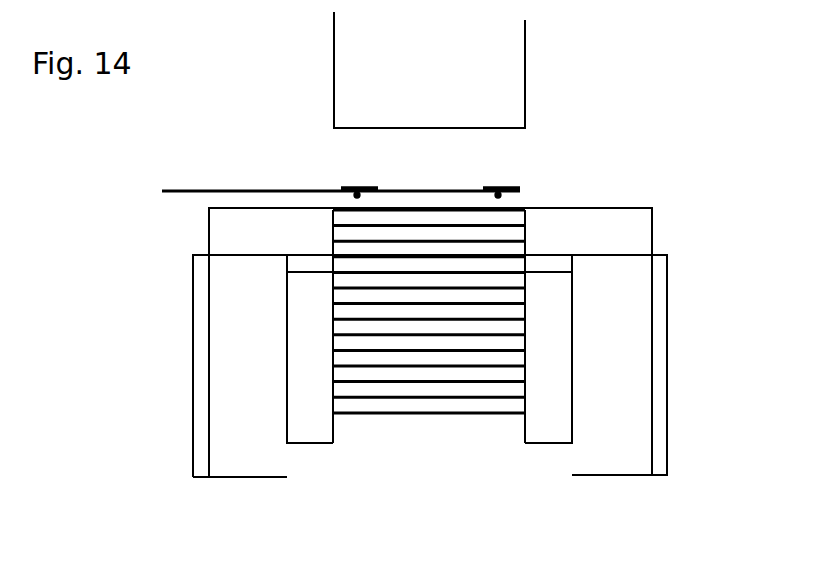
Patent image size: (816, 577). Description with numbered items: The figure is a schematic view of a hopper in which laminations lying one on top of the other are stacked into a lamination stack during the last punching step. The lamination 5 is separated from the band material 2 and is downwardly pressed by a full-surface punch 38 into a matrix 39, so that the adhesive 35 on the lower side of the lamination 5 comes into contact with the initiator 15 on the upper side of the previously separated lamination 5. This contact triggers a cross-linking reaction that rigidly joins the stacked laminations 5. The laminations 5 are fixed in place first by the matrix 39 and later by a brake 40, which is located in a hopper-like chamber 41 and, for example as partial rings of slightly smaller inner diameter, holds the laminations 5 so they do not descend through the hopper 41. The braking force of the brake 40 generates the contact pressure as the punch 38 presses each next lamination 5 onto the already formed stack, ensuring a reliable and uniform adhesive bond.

The band material 2 is at (180, 190).
The lamination 5 is at (513, 217).
The initiator 15 is at (519, 165).
The adhesive 35 is at (357, 193).
The full-surface punch 38 is at (502, 69).
The matrix 39 is at (565, 237).
The brake 40 is at (553, 347).
The hopper-like chamber 41 is at (382, 434).